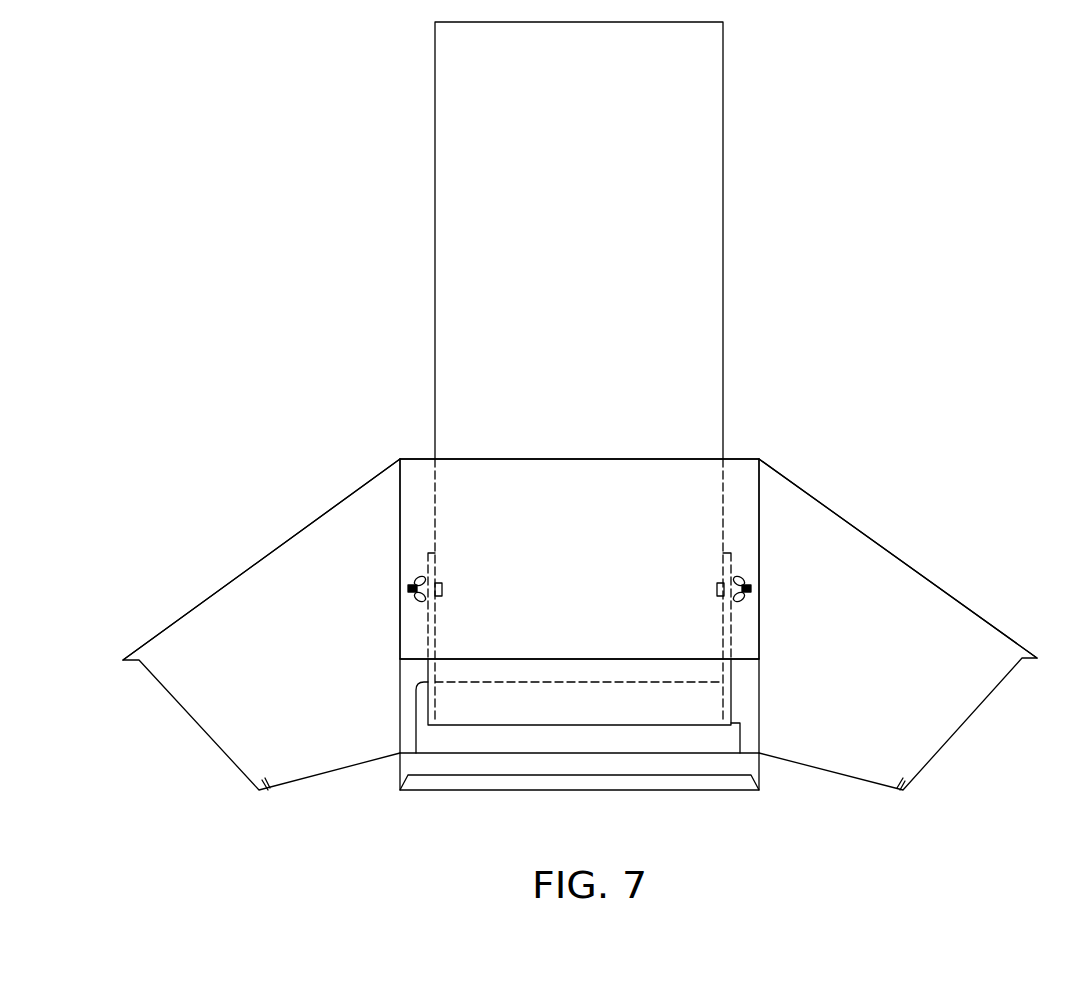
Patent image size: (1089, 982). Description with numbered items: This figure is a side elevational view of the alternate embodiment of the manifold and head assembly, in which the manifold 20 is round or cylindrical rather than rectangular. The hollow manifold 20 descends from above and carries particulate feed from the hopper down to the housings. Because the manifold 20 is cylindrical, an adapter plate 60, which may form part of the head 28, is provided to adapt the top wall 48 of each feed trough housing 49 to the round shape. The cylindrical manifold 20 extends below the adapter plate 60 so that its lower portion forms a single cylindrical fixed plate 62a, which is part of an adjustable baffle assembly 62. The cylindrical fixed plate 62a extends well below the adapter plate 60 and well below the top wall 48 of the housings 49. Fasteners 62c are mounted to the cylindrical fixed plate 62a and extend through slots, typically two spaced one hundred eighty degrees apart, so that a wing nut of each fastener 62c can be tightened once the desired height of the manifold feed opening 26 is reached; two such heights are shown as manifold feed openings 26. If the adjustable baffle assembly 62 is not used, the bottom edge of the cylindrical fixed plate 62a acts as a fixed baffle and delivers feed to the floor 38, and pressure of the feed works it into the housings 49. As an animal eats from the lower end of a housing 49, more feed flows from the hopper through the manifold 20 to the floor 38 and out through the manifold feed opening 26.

The manifold 20 is at (687, 260).
The adapter plate 60 is at (741, 459).
The adjustable baffle assembly 62 is at (737, 525).
The cylindrical fixed plate 62a is at (579, 611).
The fasteners 62c is at (750, 598).
The manifold feed opening 26 is at (414, 718).
The floor 38 is at (447, 753).
The feed trough housing 49 is at (220, 542).
The head 28 is at (982, 582).
The top wall 48 is at (318, 517).